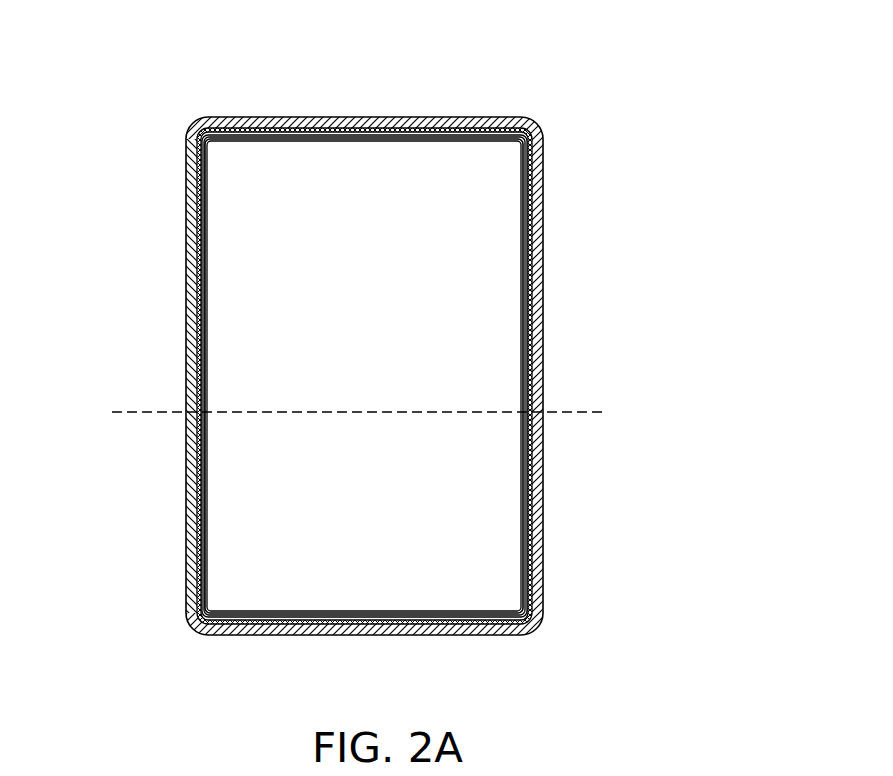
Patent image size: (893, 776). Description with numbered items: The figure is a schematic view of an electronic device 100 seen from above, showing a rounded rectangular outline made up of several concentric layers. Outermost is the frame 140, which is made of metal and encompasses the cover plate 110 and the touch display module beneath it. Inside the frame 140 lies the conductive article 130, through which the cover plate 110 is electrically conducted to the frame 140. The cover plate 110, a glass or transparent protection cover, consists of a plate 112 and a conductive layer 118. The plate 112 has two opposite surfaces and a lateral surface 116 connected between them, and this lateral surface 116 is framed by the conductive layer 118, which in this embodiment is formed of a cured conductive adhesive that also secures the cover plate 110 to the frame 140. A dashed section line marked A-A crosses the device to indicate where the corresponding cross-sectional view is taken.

The electronic device 100 is at (406, 344).
The cover plate 110 is at (442, 376).
The plate 112 is at (627, 175).
The lateral surface 116 is at (527, 255).
The conductive layer 118 is at (529, 197).
The conductive article 130 is at (528, 473).
The frame 140 is at (538, 562).